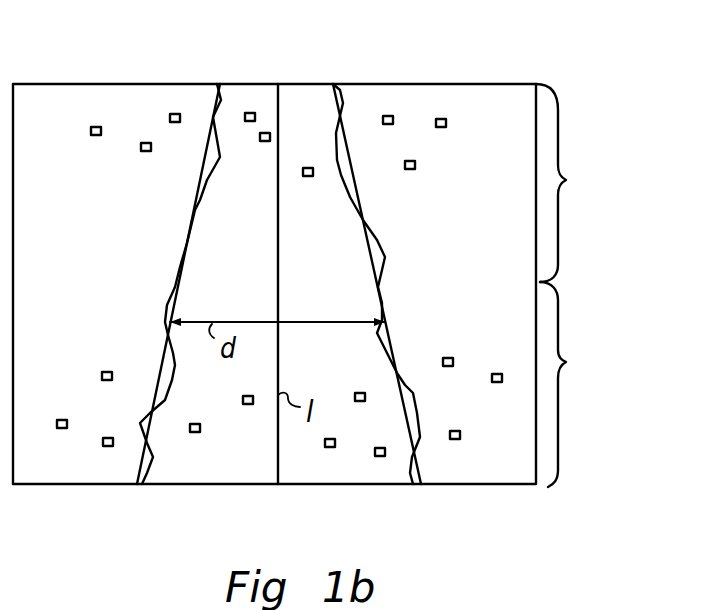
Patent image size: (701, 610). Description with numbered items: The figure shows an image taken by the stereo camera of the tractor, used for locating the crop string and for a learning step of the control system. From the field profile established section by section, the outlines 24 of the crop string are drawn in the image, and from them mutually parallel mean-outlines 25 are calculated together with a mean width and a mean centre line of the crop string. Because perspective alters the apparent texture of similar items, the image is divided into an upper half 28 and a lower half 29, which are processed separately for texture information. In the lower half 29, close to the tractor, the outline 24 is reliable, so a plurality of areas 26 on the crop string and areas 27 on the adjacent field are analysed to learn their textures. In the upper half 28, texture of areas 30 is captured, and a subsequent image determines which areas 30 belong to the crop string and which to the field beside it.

The outlines 24 is at (163, 317).
The mean-outlines 25 is at (197, 180).
The areas 26 is at (248, 404).
The areas 27 is at (107, 380).
The upper half 28 is at (577, 183).
The lower half 29 is at (577, 384).
The areas 30 is at (146, 143).